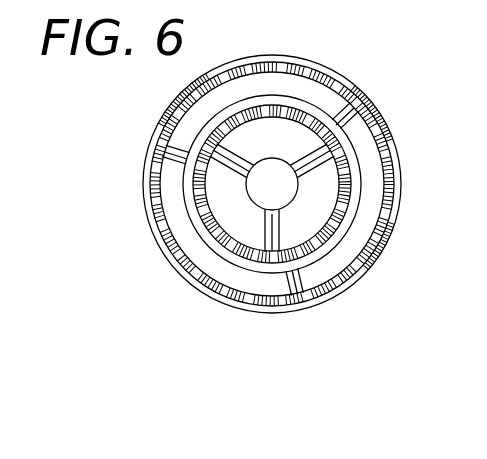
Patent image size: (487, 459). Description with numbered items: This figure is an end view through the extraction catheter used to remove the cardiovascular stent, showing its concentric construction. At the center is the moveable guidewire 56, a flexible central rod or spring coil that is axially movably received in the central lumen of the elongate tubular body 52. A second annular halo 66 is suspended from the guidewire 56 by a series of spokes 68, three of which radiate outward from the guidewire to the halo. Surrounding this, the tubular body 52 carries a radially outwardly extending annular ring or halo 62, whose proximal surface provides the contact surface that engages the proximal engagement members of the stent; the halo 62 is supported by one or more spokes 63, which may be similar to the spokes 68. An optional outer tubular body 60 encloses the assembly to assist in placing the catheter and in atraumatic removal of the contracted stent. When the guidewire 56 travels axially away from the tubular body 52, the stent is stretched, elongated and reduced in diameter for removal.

The elongate tubular body 52 is at (354, 182).
The guidewire 56 is at (285, 201).
The outer tubular body 60 is at (381, 130).
The halo 62 is at (164, 241).
The spokes 63 is at (173, 148).
The second annular halo 66 is at (300, 220).
The spokes 68 is at (262, 234).